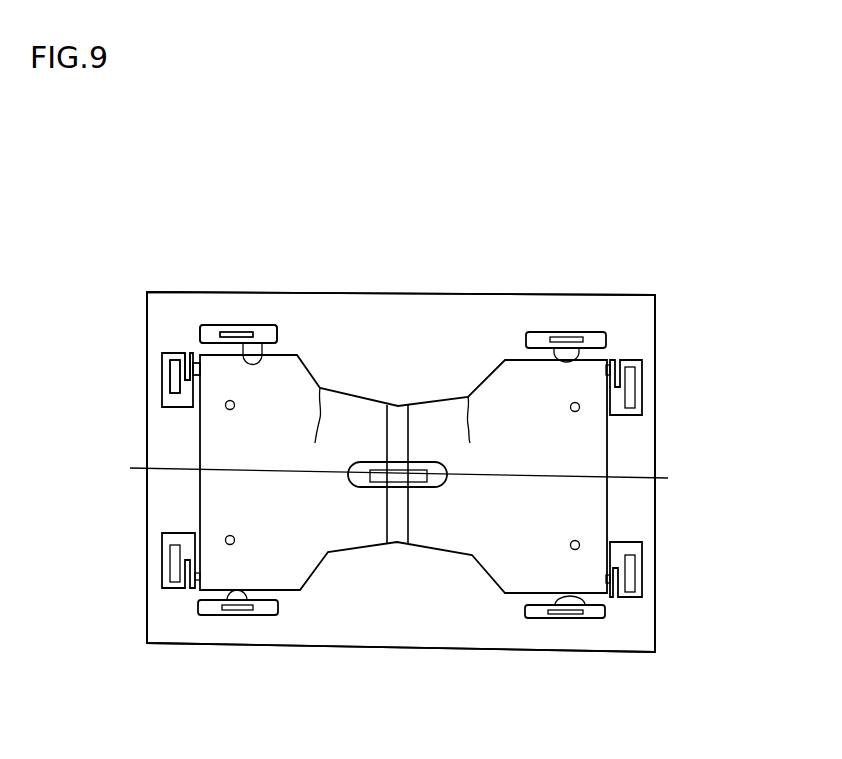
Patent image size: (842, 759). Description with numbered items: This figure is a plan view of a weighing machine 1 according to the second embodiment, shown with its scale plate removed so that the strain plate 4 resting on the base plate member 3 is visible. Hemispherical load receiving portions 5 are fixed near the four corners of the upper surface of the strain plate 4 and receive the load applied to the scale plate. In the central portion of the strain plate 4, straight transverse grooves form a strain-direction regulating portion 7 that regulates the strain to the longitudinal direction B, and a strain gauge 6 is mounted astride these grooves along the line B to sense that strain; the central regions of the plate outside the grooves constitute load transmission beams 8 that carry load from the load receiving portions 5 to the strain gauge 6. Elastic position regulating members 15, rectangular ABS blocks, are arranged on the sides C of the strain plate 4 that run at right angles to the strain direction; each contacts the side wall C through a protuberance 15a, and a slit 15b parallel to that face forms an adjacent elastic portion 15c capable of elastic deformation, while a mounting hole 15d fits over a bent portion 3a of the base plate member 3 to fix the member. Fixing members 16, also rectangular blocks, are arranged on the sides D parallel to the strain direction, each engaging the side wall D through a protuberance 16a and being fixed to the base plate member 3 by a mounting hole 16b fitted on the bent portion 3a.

The weighing machine 1 is at (375, 291).
The base plate member 3 is at (580, 308).
The bent portion 3a is at (250, 343).
The strain plate 4 is at (357, 402).
The load receiving portions 5 is at (234, 407).
The strain gauge 6 is at (378, 488).
The strain-direction regulating portion 7 is at (400, 508).
The load transmission beams 8 is at (320, 388).
The position regulating member 15 is at (165, 400).
The protuberance 15a is at (191, 367).
The slit 15b is at (197, 352).
The elastic portion 15c is at (187, 353).
The mounting hole 15d is at (168, 377).
The fixing member 16 is at (212, 330).
The protuberance 16a is at (265, 343).
The mounting hole 16b is at (227, 330).
The strain direction line B- B is at (398, 474).
The sides C is at (197, 498).
The sides D is at (283, 355).